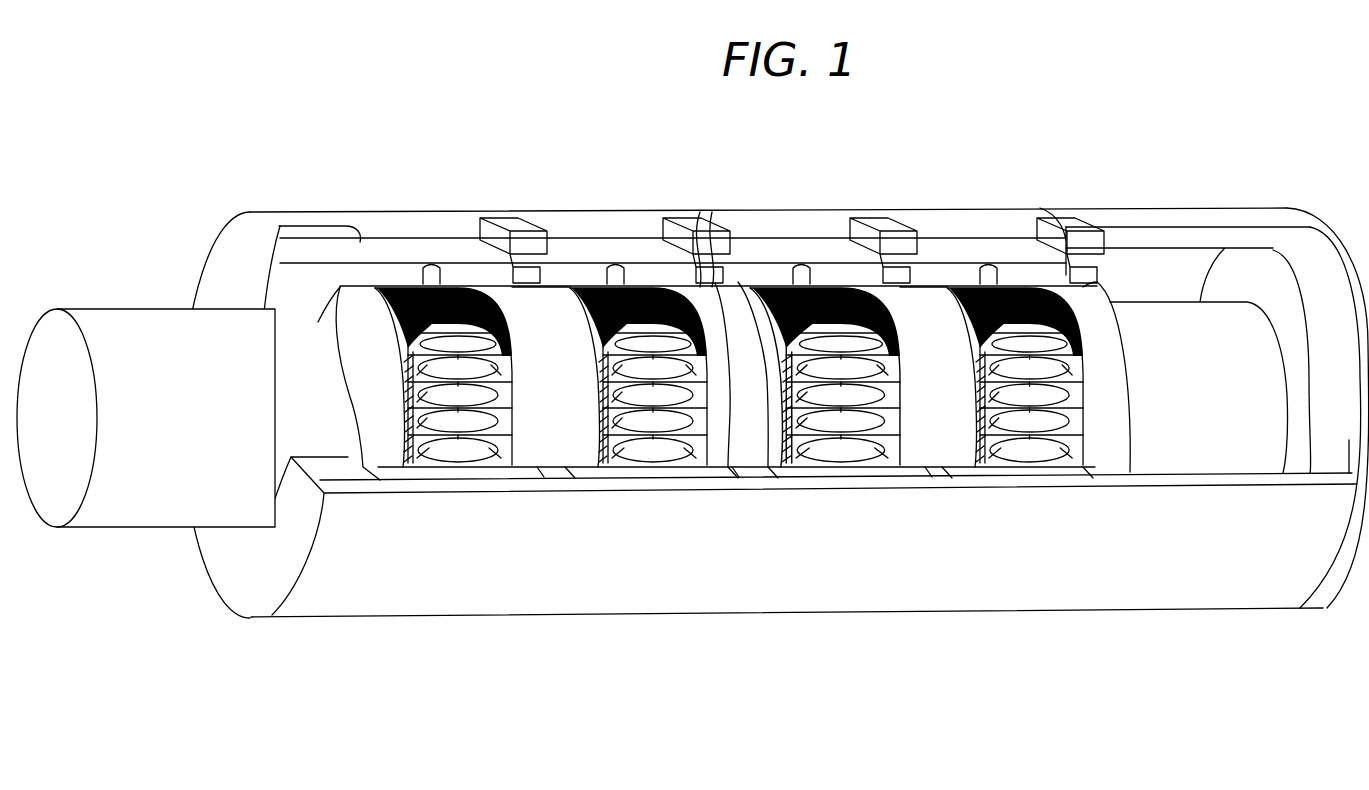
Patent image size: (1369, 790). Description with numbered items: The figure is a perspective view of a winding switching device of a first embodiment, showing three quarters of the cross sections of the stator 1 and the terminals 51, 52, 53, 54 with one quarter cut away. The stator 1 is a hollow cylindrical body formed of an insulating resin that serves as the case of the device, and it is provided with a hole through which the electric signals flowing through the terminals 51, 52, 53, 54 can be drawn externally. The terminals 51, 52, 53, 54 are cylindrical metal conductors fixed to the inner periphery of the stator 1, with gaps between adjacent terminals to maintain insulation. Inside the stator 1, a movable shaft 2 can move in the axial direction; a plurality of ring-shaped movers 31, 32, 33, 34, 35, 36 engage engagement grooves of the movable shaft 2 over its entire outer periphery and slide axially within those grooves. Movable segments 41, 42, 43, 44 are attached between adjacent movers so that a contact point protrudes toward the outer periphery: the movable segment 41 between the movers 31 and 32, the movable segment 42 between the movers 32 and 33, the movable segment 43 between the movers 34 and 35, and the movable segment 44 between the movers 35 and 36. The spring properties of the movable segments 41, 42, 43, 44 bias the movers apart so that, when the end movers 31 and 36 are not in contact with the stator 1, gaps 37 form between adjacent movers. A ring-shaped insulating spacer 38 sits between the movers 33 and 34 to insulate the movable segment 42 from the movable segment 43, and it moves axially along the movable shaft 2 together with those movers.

The stator 1 is at (219, 572).
The movable shaft 2 is at (155, 317).
The mover 31 is at (375, 453).
The mover 32 is at (548, 440).
The mover 33 is at (715, 450).
The mover 34 is at (772, 448).
The mover 35 is at (928, 453).
The mover 36 is at (1109, 455).
The gap 37 is at (455, 438).
The spacer 38 is at (708, 283).
The movable segment 41 is at (410, 287).
The movable segment 42 is at (590, 287).
The movable segment 43 is at (782, 283).
The movable segment 44 is at (960, 283).
The terminal 51 is at (458, 245).
The terminal 52 is at (637, 242).
The terminal 53 is at (832, 243).
The terminal 54 is at (1010, 240).